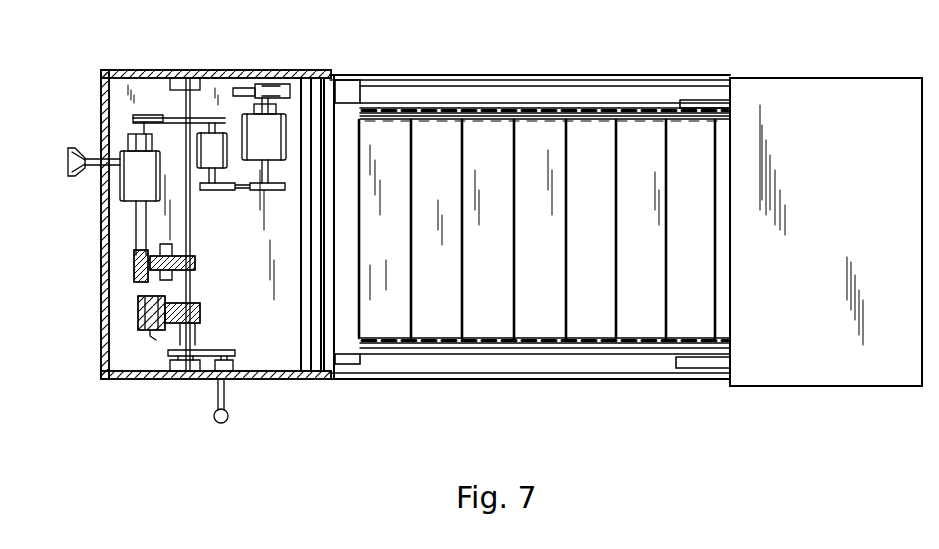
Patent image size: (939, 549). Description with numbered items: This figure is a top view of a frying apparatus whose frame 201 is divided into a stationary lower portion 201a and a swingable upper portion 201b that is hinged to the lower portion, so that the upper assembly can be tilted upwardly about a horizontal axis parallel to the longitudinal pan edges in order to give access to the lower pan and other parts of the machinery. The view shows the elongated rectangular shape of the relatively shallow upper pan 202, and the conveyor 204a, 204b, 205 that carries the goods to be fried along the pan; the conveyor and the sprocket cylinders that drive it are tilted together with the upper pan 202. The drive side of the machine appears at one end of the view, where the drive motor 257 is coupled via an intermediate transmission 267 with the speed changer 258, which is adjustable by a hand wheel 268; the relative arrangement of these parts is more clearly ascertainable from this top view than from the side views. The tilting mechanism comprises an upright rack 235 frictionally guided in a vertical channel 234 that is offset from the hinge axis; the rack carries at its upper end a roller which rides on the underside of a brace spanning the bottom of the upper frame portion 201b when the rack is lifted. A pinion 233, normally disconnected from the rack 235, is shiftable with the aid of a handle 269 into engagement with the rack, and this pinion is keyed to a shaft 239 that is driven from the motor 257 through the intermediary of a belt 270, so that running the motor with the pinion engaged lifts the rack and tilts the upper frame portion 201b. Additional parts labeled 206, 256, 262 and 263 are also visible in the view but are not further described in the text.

The frame 201 is at (506, 73).
The stationary lower portion 201a is at (100, 265).
The swingable upper portion 201b is at (318, 380).
The upper pan 202 is at (645, 130).
The conveyor 204a is at (547, 122).
The conveyor 204b is at (541, 336).
The conveyor 205 is at (458, 245).
The end panel 206 is at (834, 380).
The pinion 233 is at (202, 312).
The vertical channel 234 is at (150, 331).
The upright rack 235 is at (136, 318).
The shaft 239 is at (192, 246).
The mounting bracket 256 is at (242, 86).
The drive motor 257 is at (288, 100).
The speed changer 258 is at (112, 198).
The rail 262 is at (558, 78).
The mounting block 263 is at (348, 78).
The intermediate transmission 267 is at (202, 143).
The hand wheel 268 is at (66, 153).
The handle 269 is at (214, 420).
The belt 270 is at (233, 192).